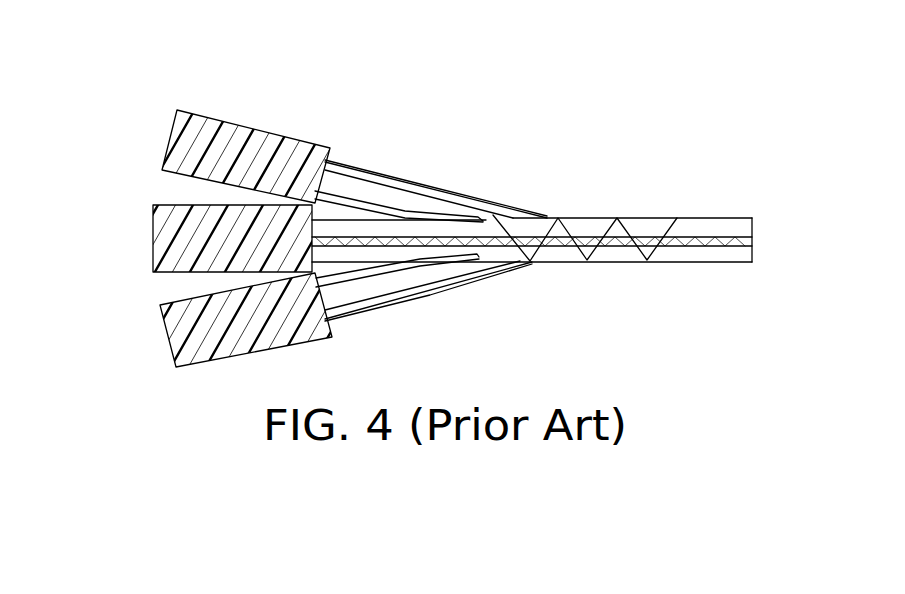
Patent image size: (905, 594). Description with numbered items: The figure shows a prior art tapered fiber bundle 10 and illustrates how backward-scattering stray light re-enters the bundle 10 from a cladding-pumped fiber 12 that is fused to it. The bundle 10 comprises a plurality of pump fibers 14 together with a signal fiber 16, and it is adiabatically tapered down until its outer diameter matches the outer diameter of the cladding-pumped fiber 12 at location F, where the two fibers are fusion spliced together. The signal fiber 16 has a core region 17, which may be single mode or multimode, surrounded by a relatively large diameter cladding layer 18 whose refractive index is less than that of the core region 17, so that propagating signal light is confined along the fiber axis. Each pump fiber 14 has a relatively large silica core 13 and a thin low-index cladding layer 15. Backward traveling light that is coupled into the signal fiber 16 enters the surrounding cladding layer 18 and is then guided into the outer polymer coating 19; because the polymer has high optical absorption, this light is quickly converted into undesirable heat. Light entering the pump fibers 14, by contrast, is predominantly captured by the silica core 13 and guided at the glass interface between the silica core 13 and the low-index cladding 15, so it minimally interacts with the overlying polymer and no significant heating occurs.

The tapered fiber bundle 10 is at (62, 432).
The cladding-pumped fiber 12 is at (534, 200).
The silica core 13 is at (407, 197).
The pump fibers 14 is at (462, 196).
The low-index cladding layer 15 is at (500, 346).
The signal fiber 16 is at (158, 276).
The core region 17 is at (492, 247).
The cladding layer 18 is at (355, 290).
The outer polymer coating 19 is at (182, 403).
The location of fusion splice F is at (537, 212).